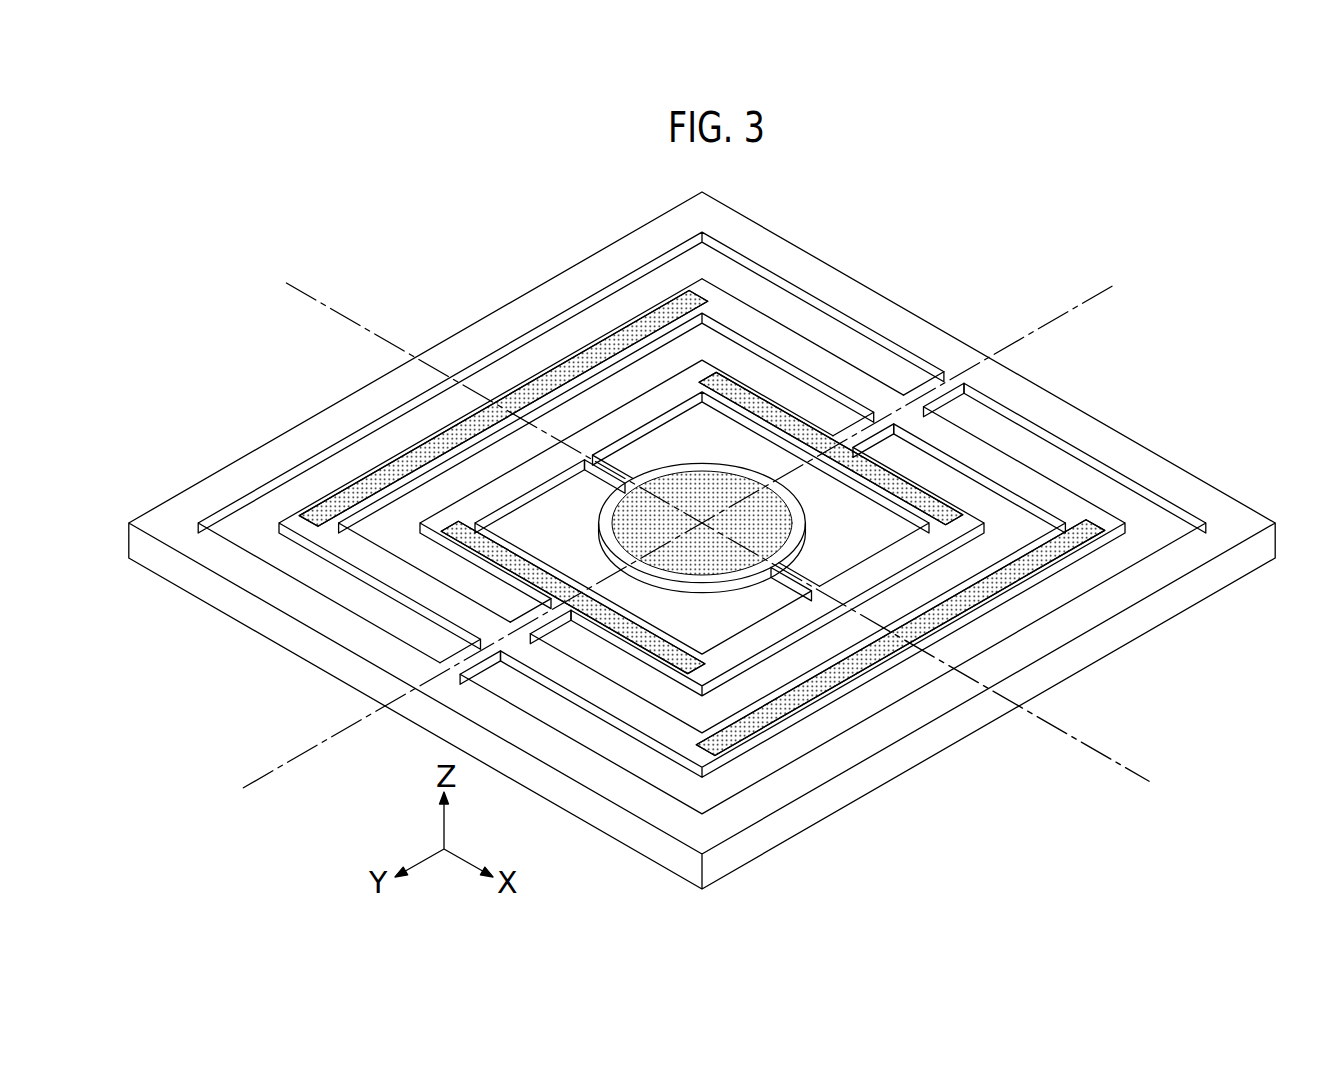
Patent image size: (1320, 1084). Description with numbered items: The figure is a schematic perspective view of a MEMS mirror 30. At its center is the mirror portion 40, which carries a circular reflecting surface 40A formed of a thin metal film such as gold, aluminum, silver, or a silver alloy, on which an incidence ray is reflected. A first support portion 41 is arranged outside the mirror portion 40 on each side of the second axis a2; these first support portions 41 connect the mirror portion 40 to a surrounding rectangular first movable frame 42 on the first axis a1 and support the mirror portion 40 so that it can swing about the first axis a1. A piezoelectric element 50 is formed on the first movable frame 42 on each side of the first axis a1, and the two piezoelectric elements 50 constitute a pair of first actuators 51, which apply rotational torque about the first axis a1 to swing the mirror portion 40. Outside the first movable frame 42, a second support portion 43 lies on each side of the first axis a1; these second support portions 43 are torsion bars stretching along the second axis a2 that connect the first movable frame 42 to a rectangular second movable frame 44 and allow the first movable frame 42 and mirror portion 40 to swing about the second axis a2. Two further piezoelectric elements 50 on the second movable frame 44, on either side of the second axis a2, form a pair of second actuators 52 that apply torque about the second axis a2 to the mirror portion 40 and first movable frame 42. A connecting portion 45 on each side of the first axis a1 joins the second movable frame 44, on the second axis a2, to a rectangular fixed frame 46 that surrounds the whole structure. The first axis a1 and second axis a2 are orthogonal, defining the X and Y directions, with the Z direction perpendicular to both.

The MEMS mirror 30 is at (441, 250).
The mirror portion 40 is at (663, 467).
The reflecting surface 40A is at (700, 488).
The first support portion 41 is at (603, 480).
The first movable frame 42 is at (867, 557).
The second support portion 43 is at (855, 428).
The second movable frame 44 is at (793, 338).
The connecting portion 45 is at (923, 388).
The fixed frame 46 is at (782, 250).
The piezoelectric element 50 is at (460, 432).
The first actuator 51 is at (930, 486).
The second actuator 52 is at (396, 452).
The first axis a1 is at (1078, 760).
The second axis a2 is at (1046, 320).